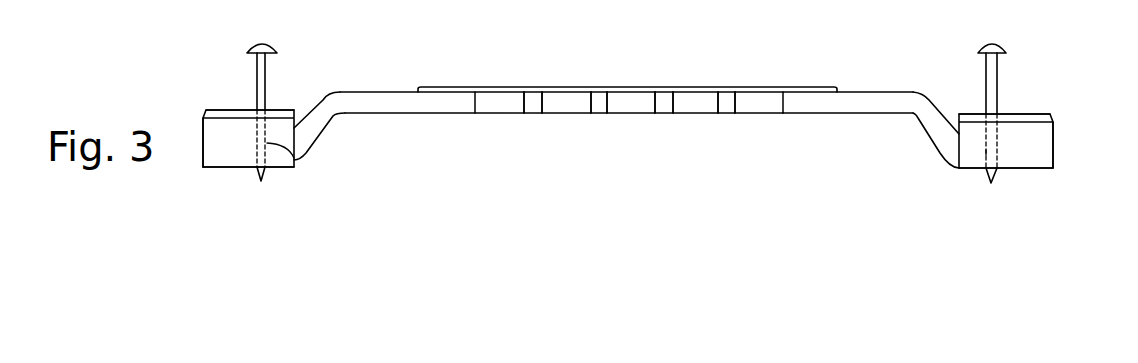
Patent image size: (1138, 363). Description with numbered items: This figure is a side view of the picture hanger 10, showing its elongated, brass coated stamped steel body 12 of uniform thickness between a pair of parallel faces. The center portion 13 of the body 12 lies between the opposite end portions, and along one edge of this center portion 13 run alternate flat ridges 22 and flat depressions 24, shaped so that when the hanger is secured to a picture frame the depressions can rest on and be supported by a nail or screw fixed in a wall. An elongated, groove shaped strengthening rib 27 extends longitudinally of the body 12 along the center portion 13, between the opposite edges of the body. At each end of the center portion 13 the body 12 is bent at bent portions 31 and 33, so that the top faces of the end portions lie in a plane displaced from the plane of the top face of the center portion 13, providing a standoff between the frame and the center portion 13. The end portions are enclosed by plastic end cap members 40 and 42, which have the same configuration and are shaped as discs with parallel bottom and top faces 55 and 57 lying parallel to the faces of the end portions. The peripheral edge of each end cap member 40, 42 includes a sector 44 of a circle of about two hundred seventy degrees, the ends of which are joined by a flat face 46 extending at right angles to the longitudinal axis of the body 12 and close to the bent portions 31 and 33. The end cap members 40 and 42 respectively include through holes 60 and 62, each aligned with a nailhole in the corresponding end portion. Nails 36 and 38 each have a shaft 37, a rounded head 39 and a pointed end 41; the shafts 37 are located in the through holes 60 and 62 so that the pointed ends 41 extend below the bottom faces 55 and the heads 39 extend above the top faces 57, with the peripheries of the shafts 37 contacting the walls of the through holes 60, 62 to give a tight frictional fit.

The picture hanger 10 is at (708, 60).
The body 12 is at (384, 91).
The center portion 13 is at (863, 107).
The flat ridges 22 is at (532, 108).
The flat depressions 24 is at (502, 107).
The strengthening rib 27 is at (533, 86).
The bent portion 31 is at (330, 130).
The bent portion 33 is at (940, 156).
The nail 36 is at (282, 72).
The shaft 37 is at (257, 72).
The nail 38 is at (1012, 66).
The rounded head 39 is at (263, 43).
The end cap member 40 is at (210, 127).
The pointed end 41 is at (267, 182).
The end cap member 42 is at (1048, 143).
The sector 44 is at (202, 152).
The flat face 46 is at (300, 123).
The bottom face 55 is at (228, 170).
The top face 57 is at (220, 108).
The through hole 60 is at (294, 163).
The through hole 62 is at (987, 150).